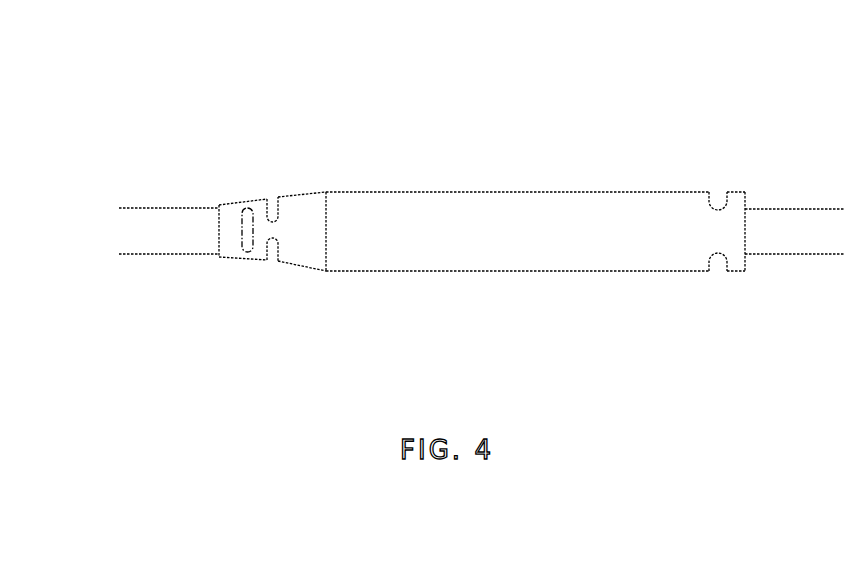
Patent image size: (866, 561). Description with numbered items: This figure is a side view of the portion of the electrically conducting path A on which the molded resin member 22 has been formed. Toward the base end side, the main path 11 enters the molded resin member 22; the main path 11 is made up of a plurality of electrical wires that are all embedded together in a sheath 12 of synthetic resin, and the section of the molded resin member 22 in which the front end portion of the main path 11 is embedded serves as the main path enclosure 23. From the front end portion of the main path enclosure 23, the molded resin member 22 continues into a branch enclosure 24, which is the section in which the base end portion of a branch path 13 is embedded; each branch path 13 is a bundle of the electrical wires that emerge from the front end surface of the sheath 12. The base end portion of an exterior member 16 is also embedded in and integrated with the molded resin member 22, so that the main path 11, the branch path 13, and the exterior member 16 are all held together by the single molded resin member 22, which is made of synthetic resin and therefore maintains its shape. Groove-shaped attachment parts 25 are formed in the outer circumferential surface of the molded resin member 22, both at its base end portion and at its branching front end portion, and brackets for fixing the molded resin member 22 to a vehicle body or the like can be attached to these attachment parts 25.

The main path 11 is at (817, 182).
The sheath 12 is at (807, 245).
The branch path 13 is at (200, 172).
The exterior member 16 is at (165, 245).
The molded resin member 22 is at (503, 205).
The main path enclosure 23 is at (736, 200).
The branch enclosure 24 is at (310, 210).
The attachment part 25 is at (272, 207).
The electrically conducting path A is at (760, 72).